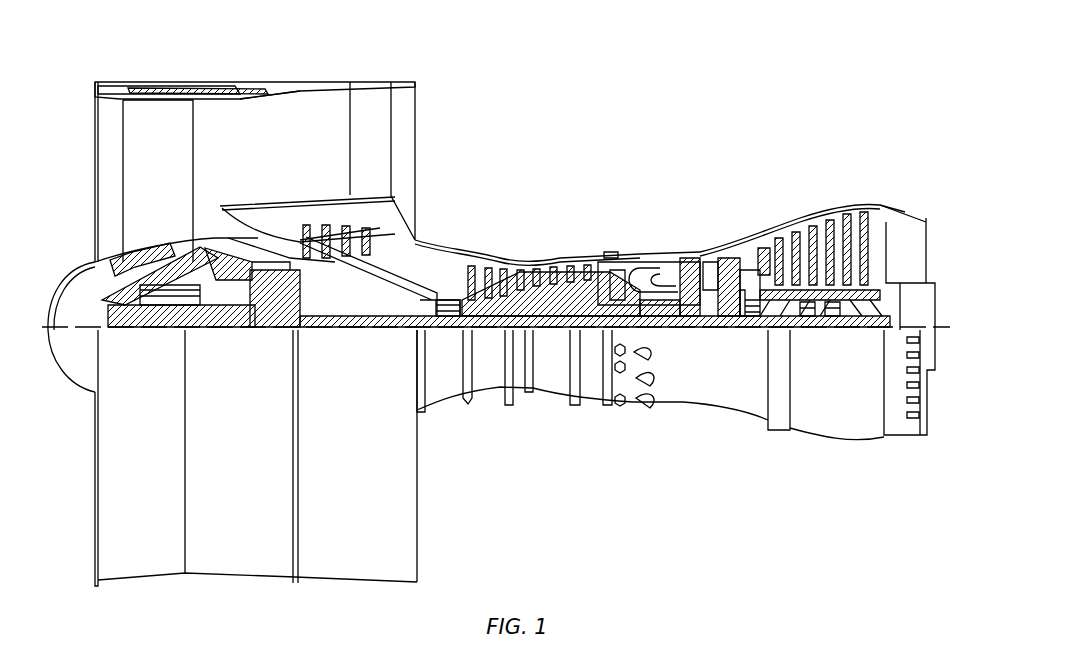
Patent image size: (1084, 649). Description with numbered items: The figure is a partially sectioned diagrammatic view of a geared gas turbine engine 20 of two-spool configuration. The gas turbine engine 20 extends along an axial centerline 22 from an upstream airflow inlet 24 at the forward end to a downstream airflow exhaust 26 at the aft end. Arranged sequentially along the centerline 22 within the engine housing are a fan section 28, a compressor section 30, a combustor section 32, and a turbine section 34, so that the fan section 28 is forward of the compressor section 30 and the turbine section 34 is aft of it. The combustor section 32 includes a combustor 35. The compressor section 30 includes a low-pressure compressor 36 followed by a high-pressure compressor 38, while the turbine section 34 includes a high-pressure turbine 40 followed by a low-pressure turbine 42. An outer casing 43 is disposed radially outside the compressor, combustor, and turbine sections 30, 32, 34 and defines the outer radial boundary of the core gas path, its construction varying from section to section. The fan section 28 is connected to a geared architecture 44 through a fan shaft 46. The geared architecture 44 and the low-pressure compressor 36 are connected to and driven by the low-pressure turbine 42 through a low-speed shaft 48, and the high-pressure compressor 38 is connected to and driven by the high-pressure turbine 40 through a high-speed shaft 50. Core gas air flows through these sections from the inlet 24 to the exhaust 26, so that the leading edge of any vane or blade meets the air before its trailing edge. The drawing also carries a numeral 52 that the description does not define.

The gas turbine engine 20 is at (698, 70).
The axial centerline 22 is at (950, 338).
The upstream airflow inlet 24 is at (86, 146).
The downstream airflow exhaust 26 is at (935, 243).
The fan section 28 is at (238, 70).
The compressor section 30 is at (620, 140).
The combustor section 32 is at (682, 250).
The turbine section 34 is at (890, 115).
The combustor 35 is at (652, 270).
The low-pressure compressor 36 is at (392, 230).
The high-pressure compressor 38 is at (539, 254).
The high-pressure turbine 40 is at (713, 248).
The low-pressure turbine 42 is at (838, 210).
The outer casing 43 is at (458, 268).
The geared architecture 44 is at (258, 333).
The fan shaft 46 is at (147, 332).
The low-speed shaft 48 is at (705, 331).
The high-speed shaft 50 is at (553, 331).
The turbine bearing 52 is at (740, 260).